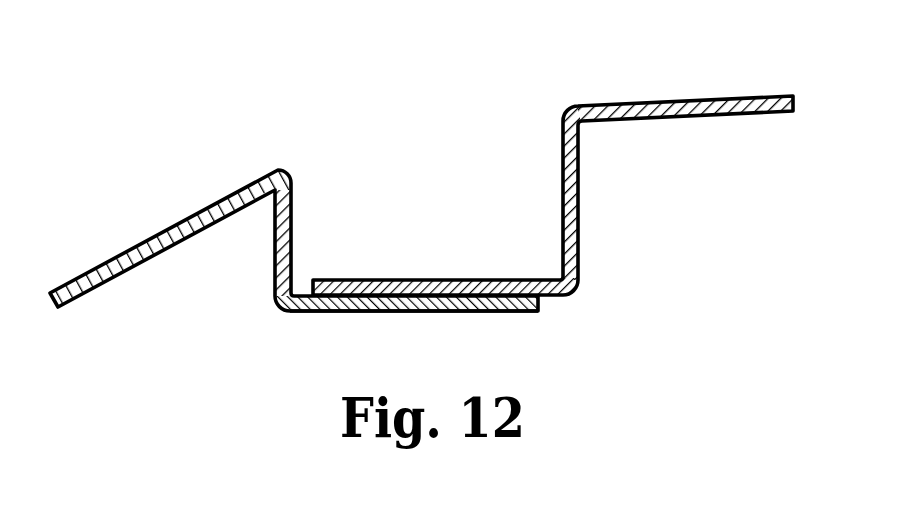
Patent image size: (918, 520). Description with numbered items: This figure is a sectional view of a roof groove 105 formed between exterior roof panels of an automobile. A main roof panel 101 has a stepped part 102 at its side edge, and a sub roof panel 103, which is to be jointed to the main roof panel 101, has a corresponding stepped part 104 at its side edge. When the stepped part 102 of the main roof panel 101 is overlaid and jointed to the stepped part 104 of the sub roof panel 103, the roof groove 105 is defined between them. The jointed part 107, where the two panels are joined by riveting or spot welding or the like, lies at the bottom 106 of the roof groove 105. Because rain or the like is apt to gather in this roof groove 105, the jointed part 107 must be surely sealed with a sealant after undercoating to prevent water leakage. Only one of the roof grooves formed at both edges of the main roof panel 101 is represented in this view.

The main roof panel 101 is at (728, 97).
The stepped part 102 is at (562, 237).
The sub roof panel 103 is at (155, 230).
The stepped part 104 is at (350, 313).
The roof groove 105 is at (442, 183).
The bottom 106 is at (408, 280).
The jointed part 107 is at (427, 307).